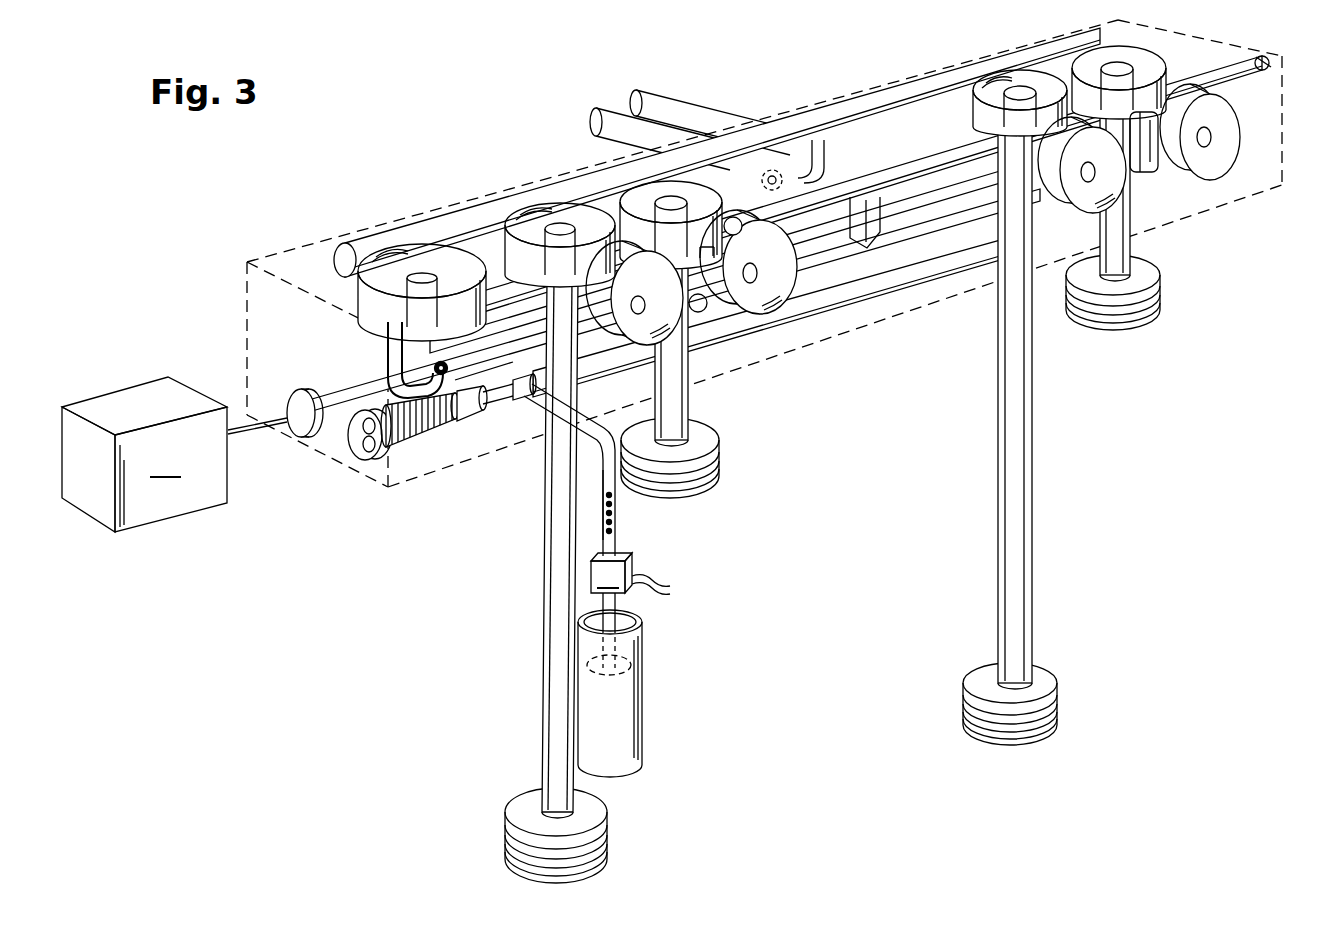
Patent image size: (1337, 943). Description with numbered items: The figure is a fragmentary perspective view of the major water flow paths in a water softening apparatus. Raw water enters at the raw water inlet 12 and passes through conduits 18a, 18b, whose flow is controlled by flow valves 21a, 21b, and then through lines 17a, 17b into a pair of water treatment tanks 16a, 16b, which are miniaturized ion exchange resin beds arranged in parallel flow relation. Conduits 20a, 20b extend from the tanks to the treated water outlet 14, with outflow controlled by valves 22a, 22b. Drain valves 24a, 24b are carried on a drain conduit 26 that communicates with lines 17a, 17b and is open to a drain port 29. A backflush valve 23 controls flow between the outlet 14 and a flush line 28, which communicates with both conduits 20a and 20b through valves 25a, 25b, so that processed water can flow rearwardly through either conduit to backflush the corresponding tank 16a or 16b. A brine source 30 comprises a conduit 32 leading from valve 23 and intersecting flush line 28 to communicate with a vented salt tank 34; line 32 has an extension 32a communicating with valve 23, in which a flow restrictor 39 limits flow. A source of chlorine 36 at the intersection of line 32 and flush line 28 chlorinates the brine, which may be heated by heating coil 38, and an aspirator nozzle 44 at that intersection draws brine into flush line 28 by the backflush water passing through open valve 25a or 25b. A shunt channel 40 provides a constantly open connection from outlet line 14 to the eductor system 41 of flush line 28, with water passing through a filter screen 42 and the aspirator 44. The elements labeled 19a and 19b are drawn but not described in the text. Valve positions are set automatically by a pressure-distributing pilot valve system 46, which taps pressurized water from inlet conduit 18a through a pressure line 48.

The raw water inlet 12 is at (690, 113).
The treated water outlet 14 is at (466, 206).
The water treatment tank 16a is at (605, 806).
The water treatment tank 16b is at (1052, 688).
The line 17a is at (722, 430).
The line 17b is at (1138, 264).
The conduit 18a is at (843, 252).
The conduit 18b is at (950, 220).
The bracket 19a is at (745, 322).
The bracket 19b is at (1165, 175).
The conduit 20a is at (548, 650).
The conduit 20b is at (998, 543).
The flow valve 21a is at (648, 192).
The flow valve 21b is at (1150, 60).
The valve 22a is at (575, 232).
The valve 22b is at (1025, 85).
The backflush valve 23 is at (432, 245).
The drain valve 24a is at (780, 272).
The drain valve 24b is at (1232, 118).
The valve 25a is at (742, 342).
The valve 25b is at (1120, 178).
The drain conduit 26 is at (918, 175).
The flush line 28 is at (705, 325).
The drain port 29 is at (1268, 60).
The brine source 30 is at (728, 522).
The conduit 32 is at (632, 545).
The line extension 32a is at (467, 373).
The salt tank 34 is at (642, 700).
The source of chlorine 36 is at (538, 405).
The heating coil 38 is at (616, 500).
The flow restrictor 39 is at (448, 355).
The shunt channel 40 is at (392, 356).
The eductor system 41 is at (380, 460).
The filter screen 42 is at (425, 465).
The aspirator nozzle 44 is at (476, 425).
The pilot valve system 46 is at (144, 454).
The pressure line 48 is at (262, 432).